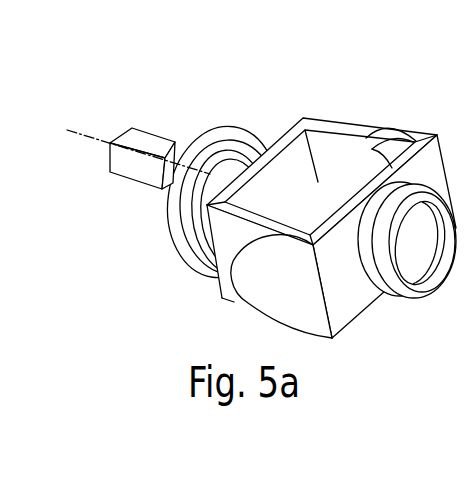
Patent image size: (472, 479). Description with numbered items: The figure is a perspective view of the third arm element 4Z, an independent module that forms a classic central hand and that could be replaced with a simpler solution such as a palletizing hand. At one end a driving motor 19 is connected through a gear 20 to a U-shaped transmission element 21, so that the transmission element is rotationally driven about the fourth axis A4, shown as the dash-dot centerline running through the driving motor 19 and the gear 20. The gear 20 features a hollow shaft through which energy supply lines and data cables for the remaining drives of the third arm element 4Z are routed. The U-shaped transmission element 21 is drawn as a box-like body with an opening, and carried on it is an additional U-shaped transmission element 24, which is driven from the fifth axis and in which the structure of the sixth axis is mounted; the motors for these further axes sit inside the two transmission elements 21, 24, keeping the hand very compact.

The driving motor 19 is at (145, 138).
The gear 20 is at (228, 127).
The U-shaped transmission element 21 is at (289, 136).
The additional U-shaped transmission element 24 is at (410, 133).
The third arm element 4Z is at (471, 32).
The fourth axis A4 is at (80, 143).